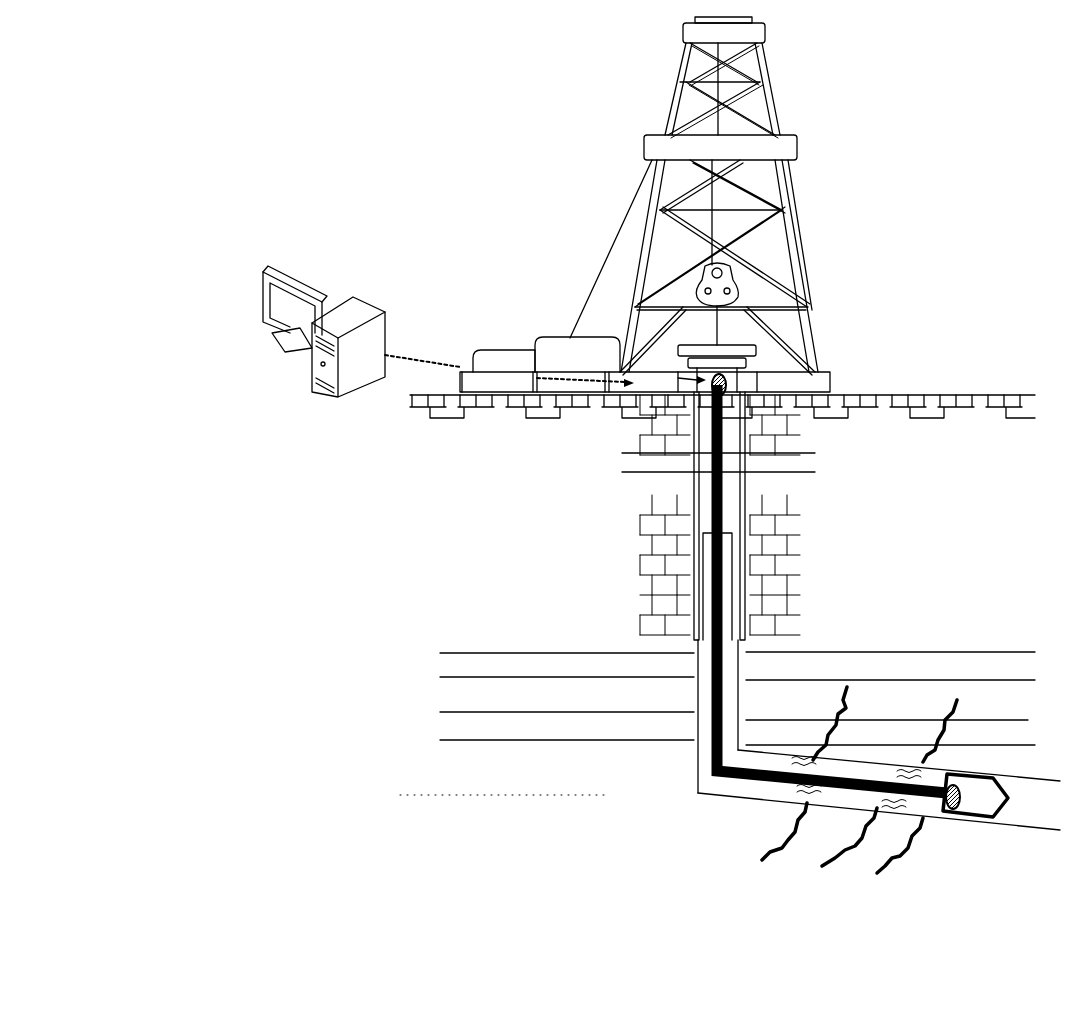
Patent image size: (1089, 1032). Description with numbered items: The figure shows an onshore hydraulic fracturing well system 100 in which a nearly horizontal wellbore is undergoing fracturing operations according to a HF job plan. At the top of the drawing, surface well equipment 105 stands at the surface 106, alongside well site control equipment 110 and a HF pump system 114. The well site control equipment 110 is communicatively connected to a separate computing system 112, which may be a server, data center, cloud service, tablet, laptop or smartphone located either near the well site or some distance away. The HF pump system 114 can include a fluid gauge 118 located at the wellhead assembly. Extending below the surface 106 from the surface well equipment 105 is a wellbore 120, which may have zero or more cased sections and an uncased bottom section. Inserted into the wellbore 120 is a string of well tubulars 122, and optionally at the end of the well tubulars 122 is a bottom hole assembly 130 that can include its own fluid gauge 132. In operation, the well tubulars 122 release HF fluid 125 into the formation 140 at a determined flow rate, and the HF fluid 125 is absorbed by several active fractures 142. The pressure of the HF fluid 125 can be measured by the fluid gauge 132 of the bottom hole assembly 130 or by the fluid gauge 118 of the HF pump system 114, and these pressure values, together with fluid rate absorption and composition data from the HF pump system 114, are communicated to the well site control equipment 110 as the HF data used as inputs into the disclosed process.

The HF well system 100 is at (298, 68).
The surface well equipment 105 is at (797, 224).
The surface 106 is at (968, 388).
The well site control equipment 110 is at (597, 372).
The computing system 112 is at (367, 300).
The HF pump system 114 is at (650, 372).
The fluid gauge 118 is at (780, 372).
The wellbore 120 is at (688, 507).
The well tubulars 122 is at (707, 762).
The HF fluid 125 is at (783, 766).
The bottom hole assembly 130 is at (1001, 797).
The fluid gauge 132 is at (950, 815).
The formation 140 is at (1012, 634).
The active fractures 142 is at (953, 697).